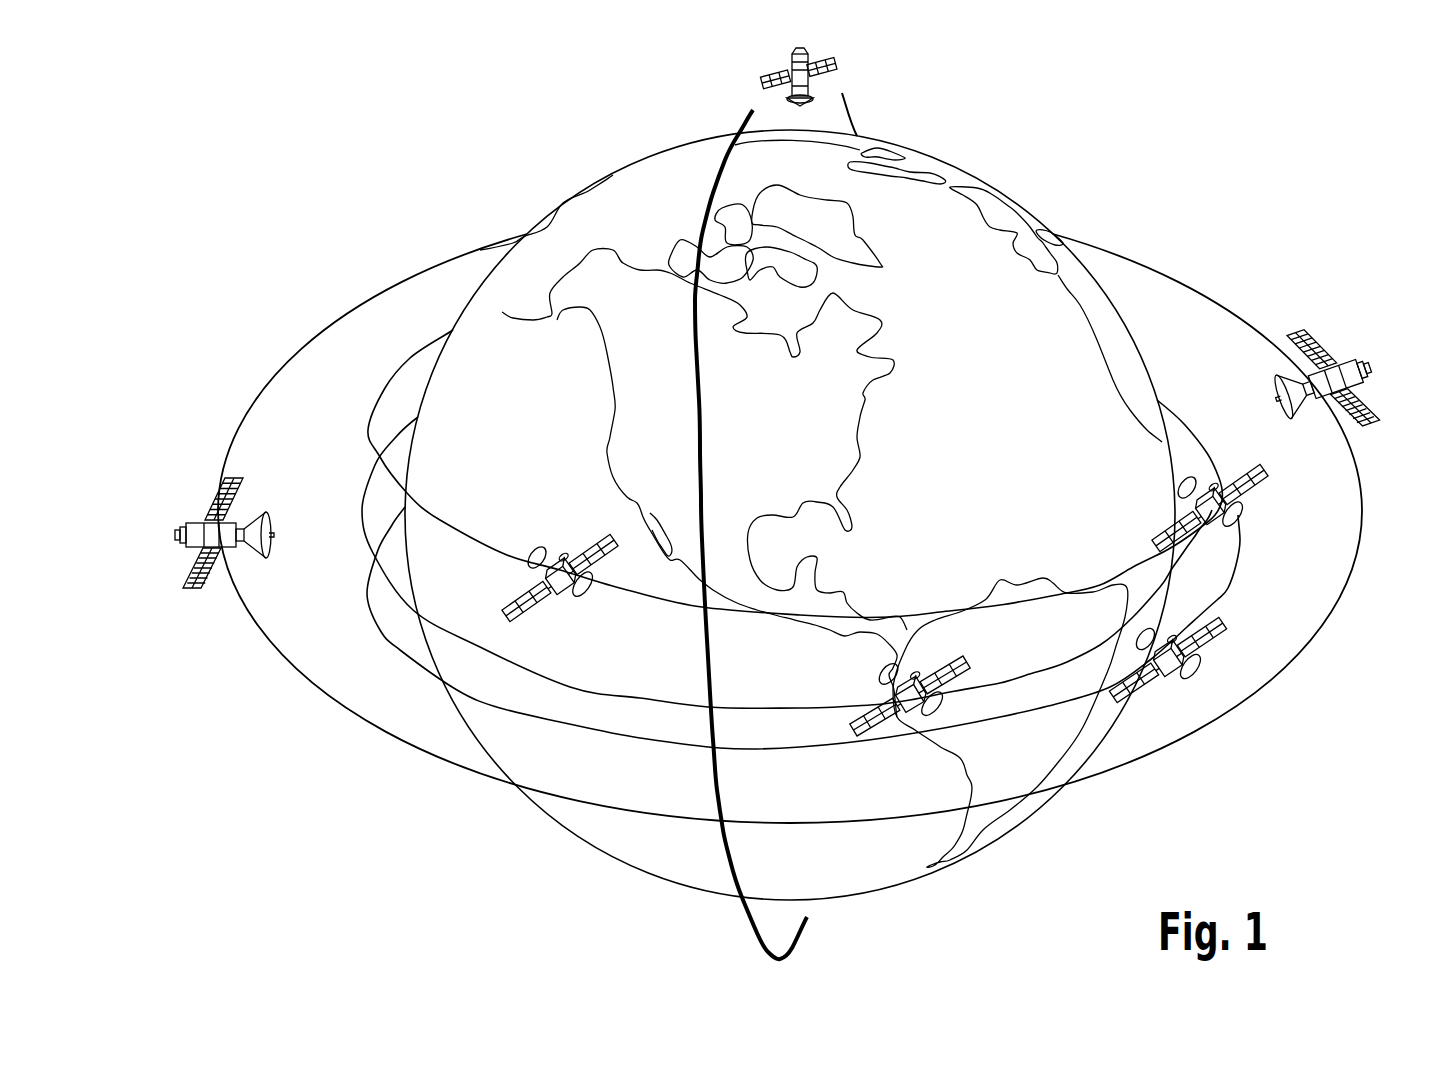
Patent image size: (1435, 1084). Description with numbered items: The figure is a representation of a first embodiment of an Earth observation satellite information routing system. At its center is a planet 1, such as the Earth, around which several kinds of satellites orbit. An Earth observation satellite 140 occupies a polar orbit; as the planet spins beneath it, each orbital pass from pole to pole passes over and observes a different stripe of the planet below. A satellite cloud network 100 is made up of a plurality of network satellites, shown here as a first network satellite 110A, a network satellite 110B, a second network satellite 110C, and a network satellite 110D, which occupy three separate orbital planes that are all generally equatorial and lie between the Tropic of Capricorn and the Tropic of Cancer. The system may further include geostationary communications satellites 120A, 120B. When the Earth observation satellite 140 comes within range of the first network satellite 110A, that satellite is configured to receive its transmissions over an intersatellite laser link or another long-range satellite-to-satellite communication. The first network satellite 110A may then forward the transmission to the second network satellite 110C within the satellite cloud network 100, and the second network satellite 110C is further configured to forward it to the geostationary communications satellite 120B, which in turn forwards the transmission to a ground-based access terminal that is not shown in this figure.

The satellite cloud network 100 is at (1138, 119).
The planet 1 is at (927, 463).
The first network satellite 110A is at (553, 597).
The network satellite 110B is at (912, 690).
The second network satellite 110C is at (1248, 509).
The network satellite 110D is at (1200, 647).
The geostationary communications satellite 120A is at (203, 522).
The geostationary communications satellite 120B is at (1350, 367).
The Earth observation satellite 140 is at (790, 68).